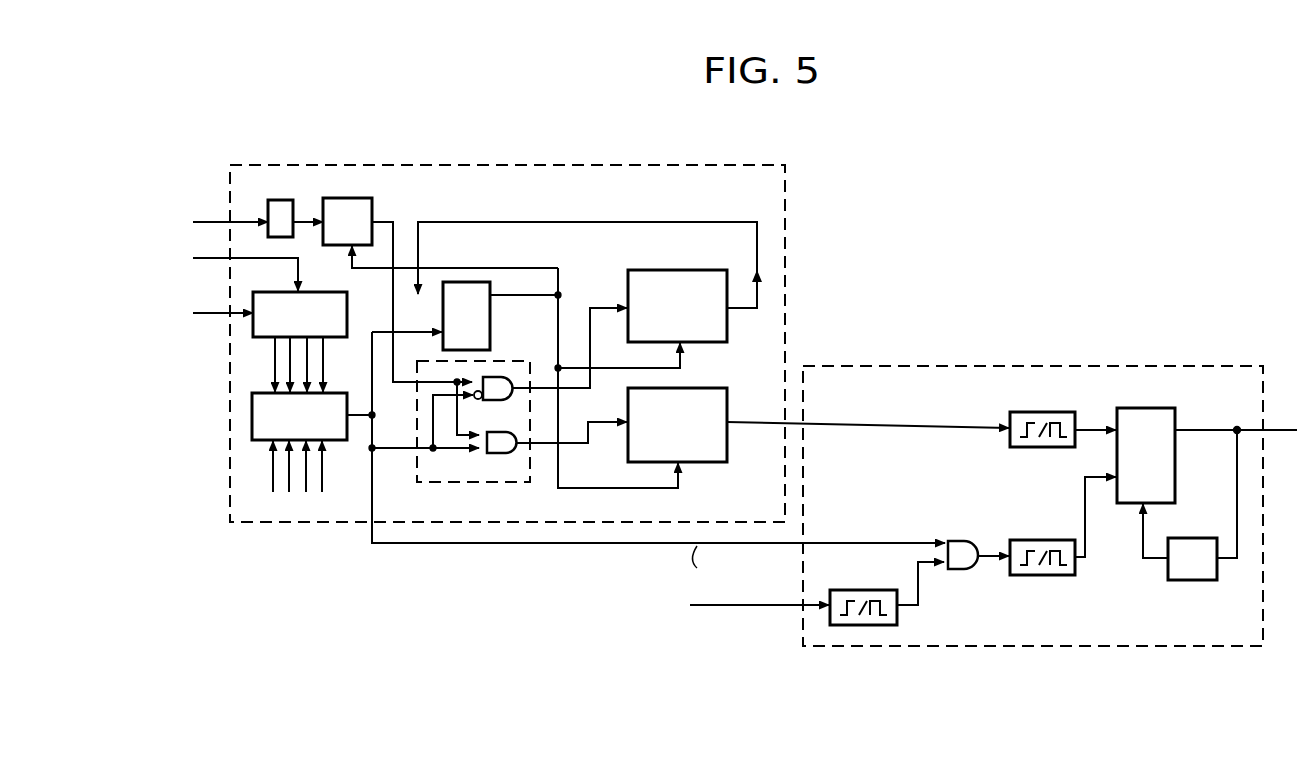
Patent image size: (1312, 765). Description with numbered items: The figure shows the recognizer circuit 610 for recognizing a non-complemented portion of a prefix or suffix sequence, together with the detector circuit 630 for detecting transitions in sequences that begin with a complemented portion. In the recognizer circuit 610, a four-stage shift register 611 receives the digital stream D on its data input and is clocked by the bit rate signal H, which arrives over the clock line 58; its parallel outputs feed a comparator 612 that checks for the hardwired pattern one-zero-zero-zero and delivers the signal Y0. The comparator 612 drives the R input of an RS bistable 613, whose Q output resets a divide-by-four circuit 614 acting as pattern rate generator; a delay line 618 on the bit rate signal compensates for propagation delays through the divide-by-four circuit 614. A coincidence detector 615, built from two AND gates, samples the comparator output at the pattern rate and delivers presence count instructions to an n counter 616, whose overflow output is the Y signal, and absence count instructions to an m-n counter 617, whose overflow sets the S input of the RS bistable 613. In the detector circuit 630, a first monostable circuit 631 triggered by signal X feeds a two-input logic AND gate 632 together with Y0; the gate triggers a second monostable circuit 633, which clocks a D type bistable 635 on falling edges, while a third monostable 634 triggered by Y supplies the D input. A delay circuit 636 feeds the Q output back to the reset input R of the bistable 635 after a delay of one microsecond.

The recognizer circuit 610 is at (521, 165).
The delay line 618 is at (286, 200).
The divide-by-four circuit 614 is at (353, 198).
The clock line 58 is at (219, 258).
The four-stage shift register 611 is at (348, 316).
The comparator 612 is at (338, 393).
The RS bistable 613 is at (493, 322).
The coincidence detector 615 is at (465, 482).
The m-n counter 617 is at (690, 270).
The n counter 616 is at (705, 388).
The detector circuit 630 is at (1010, 366).
The third monostable 634 is at (1053, 412).
The D type bistable 635 is at (1154, 388).
The two-input logic AND gate 632 is at (980, 508).
The first monostable circuit 631 is at (875, 590).
The second monostable circuit 633 is at (1053, 578).
The delay circuit 636 is at (1201, 580).